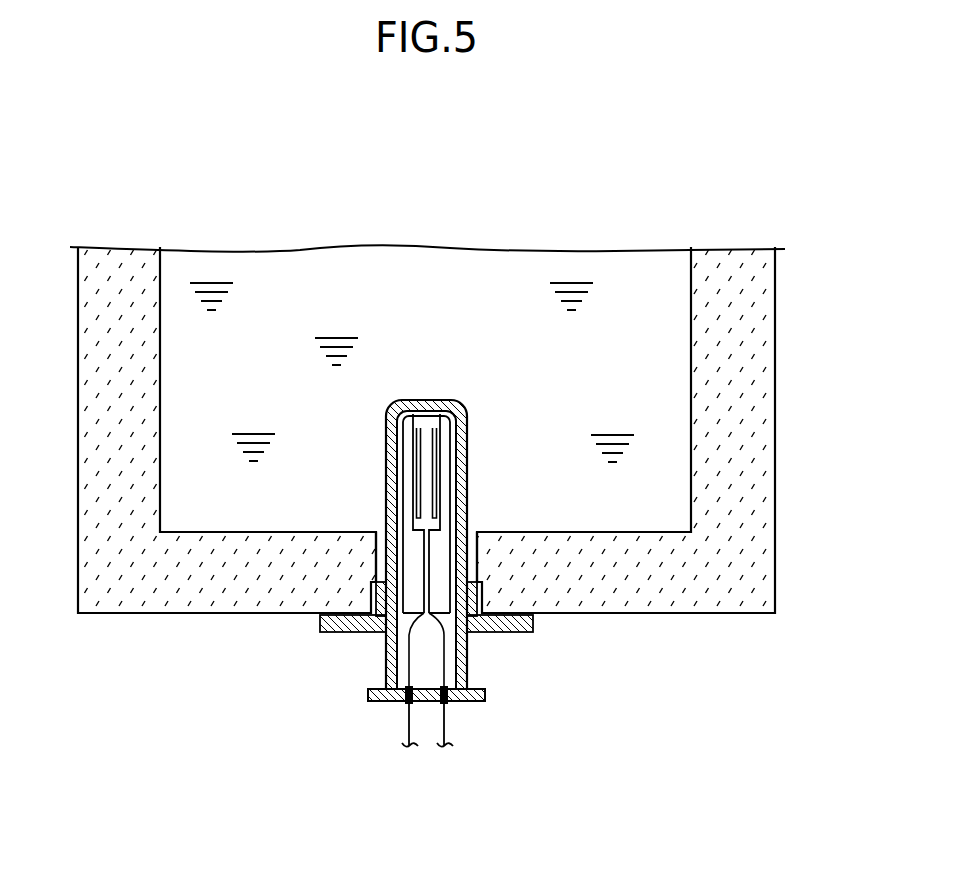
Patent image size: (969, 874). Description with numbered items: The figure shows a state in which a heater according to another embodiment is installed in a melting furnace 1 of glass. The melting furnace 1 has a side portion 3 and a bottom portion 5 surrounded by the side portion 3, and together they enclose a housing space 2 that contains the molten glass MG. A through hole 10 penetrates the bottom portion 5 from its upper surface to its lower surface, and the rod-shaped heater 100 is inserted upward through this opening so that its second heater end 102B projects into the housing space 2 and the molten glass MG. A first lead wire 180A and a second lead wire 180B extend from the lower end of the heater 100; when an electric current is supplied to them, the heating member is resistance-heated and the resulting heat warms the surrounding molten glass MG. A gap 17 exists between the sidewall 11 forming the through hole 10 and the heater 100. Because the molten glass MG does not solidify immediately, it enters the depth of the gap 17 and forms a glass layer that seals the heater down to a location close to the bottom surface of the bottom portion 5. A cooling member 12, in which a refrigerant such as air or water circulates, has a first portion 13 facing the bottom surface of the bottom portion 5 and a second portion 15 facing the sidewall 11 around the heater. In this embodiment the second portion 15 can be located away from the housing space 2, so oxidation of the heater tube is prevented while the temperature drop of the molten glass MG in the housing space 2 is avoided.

The melting furnace 1 is at (451, 381).
The housing space 2 is at (451, 315).
The side portion 3 is at (767, 391).
The bottom portion 5 is at (762, 573).
The through hole 10 is at (455, 685).
The sidewall 11 is at (368, 558).
The cooling member 12 is at (428, 685).
The first portion 13 is at (323, 633).
The second portion 15 is at (376, 597).
The gap 17 is at (378, 519).
The heater 100 is at (430, 567).
The second heater end 102B is at (430, 358).
The first lead wire 180A is at (398, 723).
The second lead wire 180B is at (452, 723).
The molten glass MG is at (300, 270).